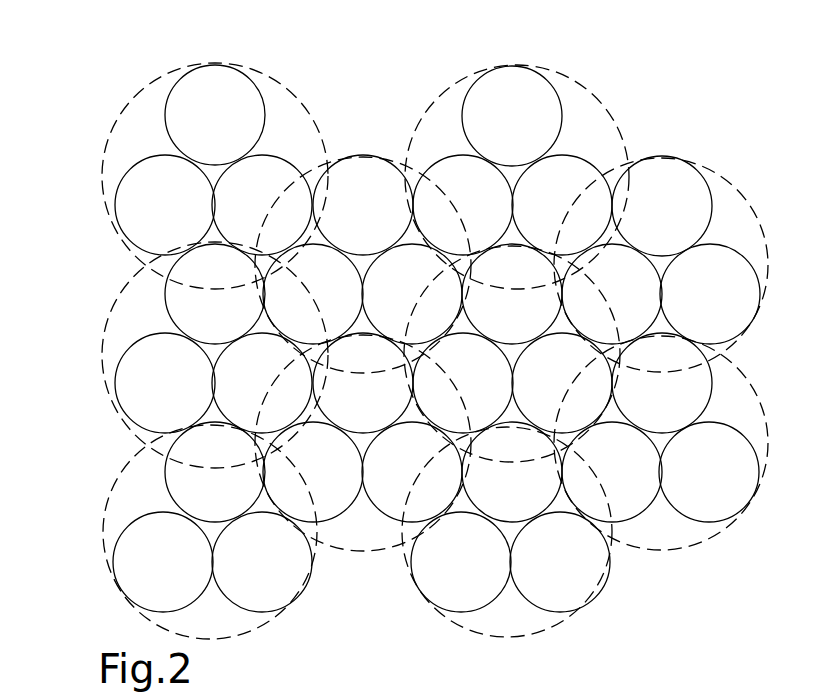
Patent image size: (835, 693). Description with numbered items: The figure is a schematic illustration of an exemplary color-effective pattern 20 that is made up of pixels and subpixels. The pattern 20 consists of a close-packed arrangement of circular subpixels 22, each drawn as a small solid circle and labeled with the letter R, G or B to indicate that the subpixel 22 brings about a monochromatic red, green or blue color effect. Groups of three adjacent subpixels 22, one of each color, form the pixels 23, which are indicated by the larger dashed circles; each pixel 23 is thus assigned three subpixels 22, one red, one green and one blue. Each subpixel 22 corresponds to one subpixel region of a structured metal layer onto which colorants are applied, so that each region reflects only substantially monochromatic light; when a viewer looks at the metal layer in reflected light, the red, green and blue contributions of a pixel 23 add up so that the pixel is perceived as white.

The color-effective pattern 20 is at (76, 587).
The subpixel 22 is at (470, 252).
The pixel 23 is at (597, 176).